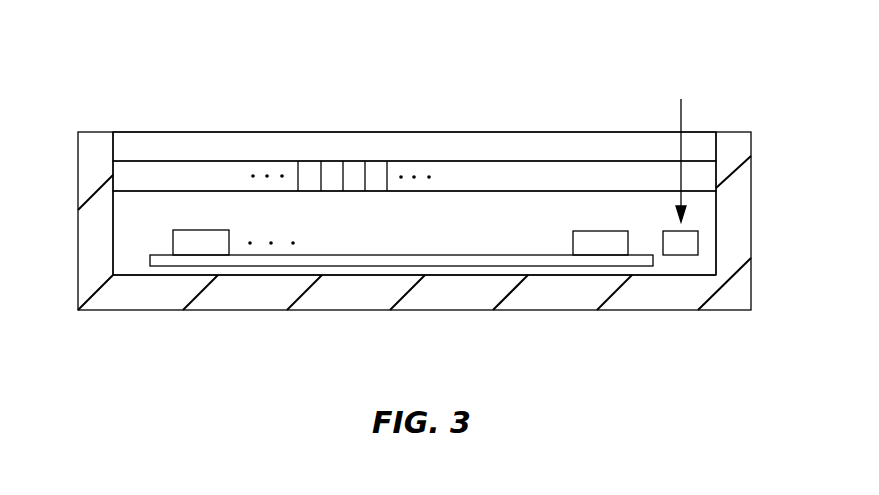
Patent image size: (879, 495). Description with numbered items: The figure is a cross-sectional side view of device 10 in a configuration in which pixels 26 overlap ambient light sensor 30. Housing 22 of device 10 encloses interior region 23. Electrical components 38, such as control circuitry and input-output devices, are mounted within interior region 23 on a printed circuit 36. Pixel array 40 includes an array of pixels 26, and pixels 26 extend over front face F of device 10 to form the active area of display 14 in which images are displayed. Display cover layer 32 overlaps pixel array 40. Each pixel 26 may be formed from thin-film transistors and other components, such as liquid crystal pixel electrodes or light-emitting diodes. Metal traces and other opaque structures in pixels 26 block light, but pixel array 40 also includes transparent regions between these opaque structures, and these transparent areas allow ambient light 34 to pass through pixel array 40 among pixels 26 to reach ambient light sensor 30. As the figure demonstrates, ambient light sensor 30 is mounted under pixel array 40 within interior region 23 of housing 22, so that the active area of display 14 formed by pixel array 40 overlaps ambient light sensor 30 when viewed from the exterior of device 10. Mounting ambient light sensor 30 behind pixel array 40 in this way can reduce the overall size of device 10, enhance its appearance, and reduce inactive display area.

The device 10 is at (777, 127).
The display 14 is at (434, 73).
The housing 22 is at (88, 246).
The interior region 23 is at (128, 212).
The pixels 26 is at (310, 170).
The ambient light sensor 30 is at (683, 256).
The display cover layer 32 is at (540, 145).
The ambient light 34 is at (682, 112).
The printed circuit 36 is at (370, 268).
The electrical components 38 is at (220, 230).
The pixel array 40 is at (200, 175).
The front face F is at (283, 99).